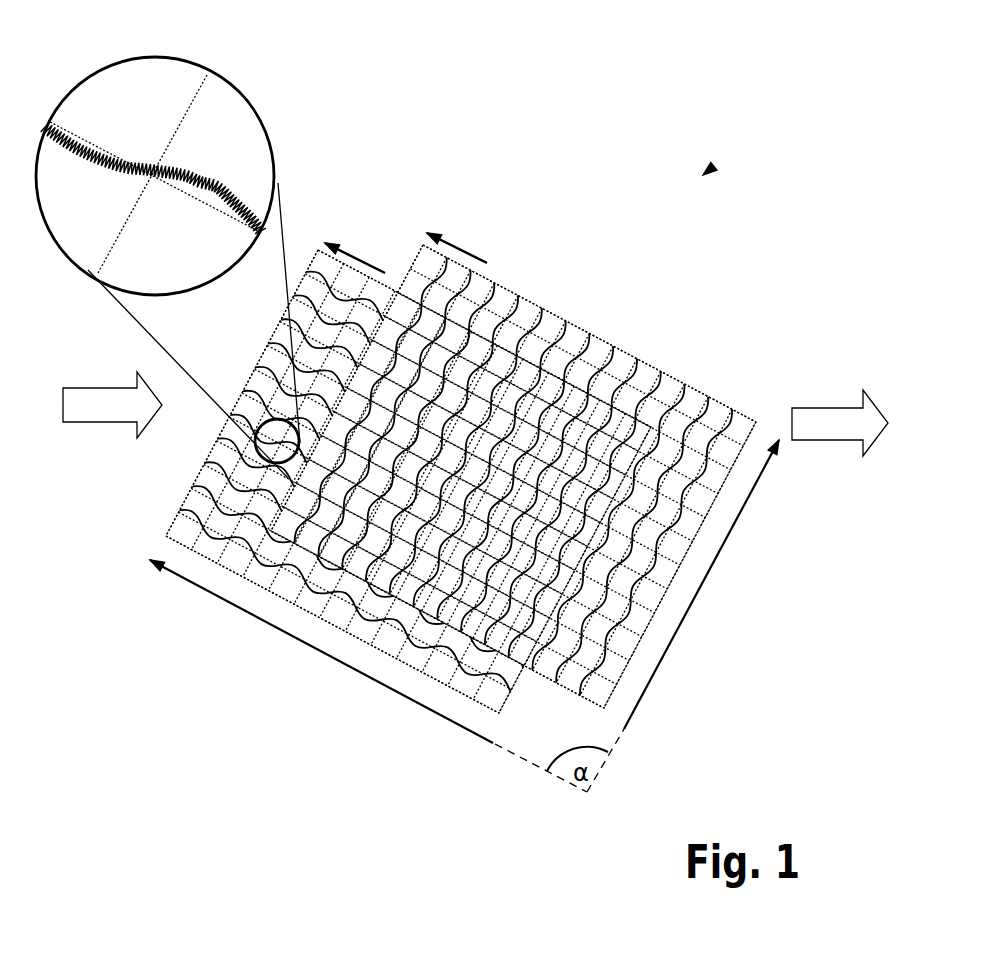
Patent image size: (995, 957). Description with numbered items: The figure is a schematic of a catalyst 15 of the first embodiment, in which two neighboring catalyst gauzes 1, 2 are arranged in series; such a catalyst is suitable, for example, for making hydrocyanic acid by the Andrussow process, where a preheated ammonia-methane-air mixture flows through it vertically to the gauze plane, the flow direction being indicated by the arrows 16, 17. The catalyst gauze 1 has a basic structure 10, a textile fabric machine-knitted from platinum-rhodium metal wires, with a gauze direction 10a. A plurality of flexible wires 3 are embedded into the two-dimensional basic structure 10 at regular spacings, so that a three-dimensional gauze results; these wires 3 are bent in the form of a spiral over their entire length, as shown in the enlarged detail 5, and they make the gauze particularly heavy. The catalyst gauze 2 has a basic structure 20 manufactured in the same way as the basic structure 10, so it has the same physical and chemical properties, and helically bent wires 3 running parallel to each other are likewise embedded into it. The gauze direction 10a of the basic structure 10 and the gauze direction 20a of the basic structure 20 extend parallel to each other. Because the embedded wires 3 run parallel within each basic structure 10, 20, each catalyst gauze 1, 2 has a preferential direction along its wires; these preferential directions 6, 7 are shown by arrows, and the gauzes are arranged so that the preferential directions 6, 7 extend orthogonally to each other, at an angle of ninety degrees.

The catalyst gauze 1 is at (365, 237).
The catalyst gauze 2 is at (458, 242).
The flexible wires 3 is at (77, 142).
The enlarged detail 5 is at (277, 148).
The preferential direction 6 is at (374, 679).
The preferential direction 7 is at (684, 633).
The basic structure 10 is at (165, 528).
The gauze direction 10a is at (355, 255).
The catalyst 15 is at (703, 175).
The arrow 16 is at (77, 385).
The arrow 17 is at (808, 405).
The basic structure 20 is at (503, 283).
The gauze direction 20a is at (475, 253).